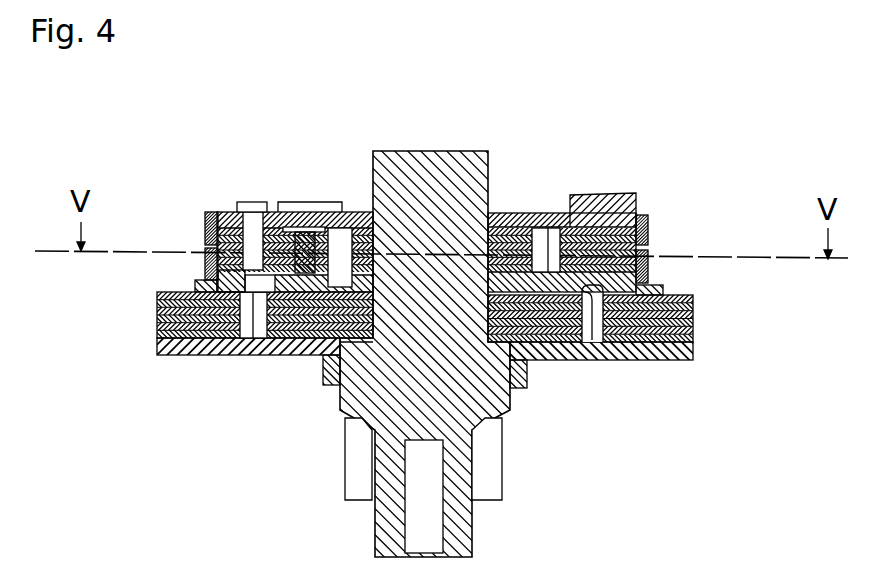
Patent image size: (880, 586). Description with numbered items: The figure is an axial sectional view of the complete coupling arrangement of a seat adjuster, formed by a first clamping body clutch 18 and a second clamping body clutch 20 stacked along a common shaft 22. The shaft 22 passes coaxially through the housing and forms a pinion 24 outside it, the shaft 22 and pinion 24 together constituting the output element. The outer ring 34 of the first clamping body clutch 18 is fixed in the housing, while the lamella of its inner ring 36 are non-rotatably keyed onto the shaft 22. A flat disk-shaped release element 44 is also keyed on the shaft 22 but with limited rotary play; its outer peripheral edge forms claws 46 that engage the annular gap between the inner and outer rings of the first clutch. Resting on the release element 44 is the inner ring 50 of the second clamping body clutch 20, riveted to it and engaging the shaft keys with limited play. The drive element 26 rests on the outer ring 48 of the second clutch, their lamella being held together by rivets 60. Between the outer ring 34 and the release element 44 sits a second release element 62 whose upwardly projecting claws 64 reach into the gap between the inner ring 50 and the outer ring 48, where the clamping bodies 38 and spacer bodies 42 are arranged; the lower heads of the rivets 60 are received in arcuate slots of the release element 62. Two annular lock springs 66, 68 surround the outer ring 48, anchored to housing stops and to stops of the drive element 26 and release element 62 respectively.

The first clamping body clutch 18 is at (183, 355).
The second clamping body clutch 20 is at (350, 195).
The shaft 22 is at (427, 168).
The pinion 24 is at (345, 485).
The drive element 26 is at (292, 205).
The outer ring 34 is at (672, 360).
The inner ring 36 is at (306, 355).
The clamping bodies 38 is at (245, 355).
The spacer bodies 42 is at (488, 125).
The release element 44 is at (553, 360).
The claws 46 is at (592, 335).
The outer ring 48 is at (220, 210).
The inner ring 50 is at (504, 232).
The rivets 60 is at (250, 203).
The release element 62 is at (612, 195).
The claws 64 is at (305, 228).
The lock spring 66 is at (650, 232).
The lock spring 68 is at (650, 265).